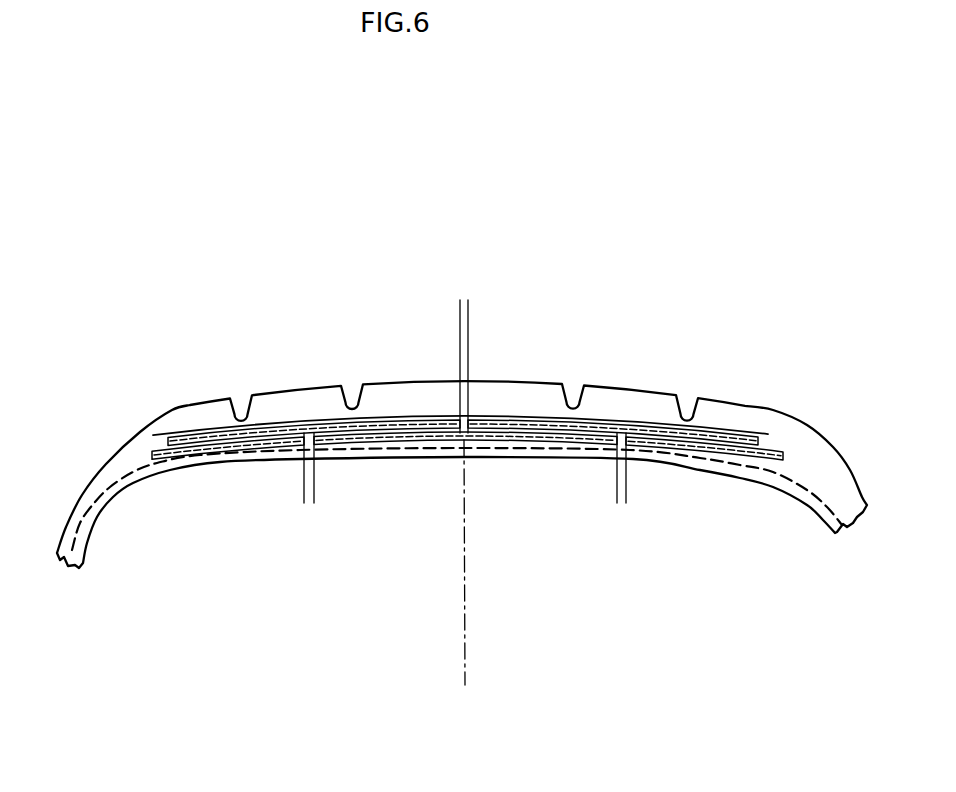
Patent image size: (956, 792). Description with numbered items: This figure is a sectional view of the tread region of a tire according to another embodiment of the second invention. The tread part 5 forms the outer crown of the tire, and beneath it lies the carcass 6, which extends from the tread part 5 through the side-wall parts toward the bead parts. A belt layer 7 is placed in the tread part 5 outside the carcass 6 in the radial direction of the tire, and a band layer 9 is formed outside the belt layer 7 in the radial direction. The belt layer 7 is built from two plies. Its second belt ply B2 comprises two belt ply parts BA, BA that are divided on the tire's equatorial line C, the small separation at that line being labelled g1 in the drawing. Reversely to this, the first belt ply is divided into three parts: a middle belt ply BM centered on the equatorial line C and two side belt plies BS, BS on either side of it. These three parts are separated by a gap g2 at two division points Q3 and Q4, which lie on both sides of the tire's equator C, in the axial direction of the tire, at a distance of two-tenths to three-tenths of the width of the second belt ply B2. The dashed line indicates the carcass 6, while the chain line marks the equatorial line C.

The tread part 5 is at (293, 378).
The carcass 6 is at (97, 500).
The belt layer 7 is at (770, 441).
The band layer 9 is at (389, 414).
The second belt ply B2 is at (613, 185).
The belt ply part BA is at (412, 412).
The side belt ply BS is at (237, 445).
The middle belt ply BM is at (370, 442).
The central gap g1 is at (430, 363).
The gap g2 is at (626, 495).
The division point Q3 is at (622, 432).
The division point Q4 is at (303, 430).
The tire's equatorial line C is at (467, 648).